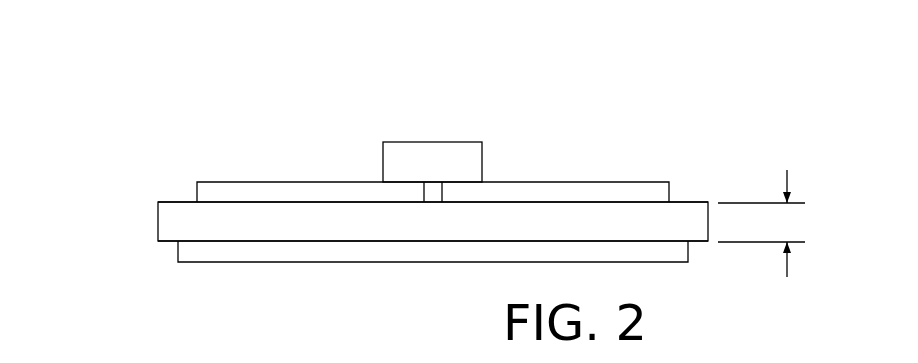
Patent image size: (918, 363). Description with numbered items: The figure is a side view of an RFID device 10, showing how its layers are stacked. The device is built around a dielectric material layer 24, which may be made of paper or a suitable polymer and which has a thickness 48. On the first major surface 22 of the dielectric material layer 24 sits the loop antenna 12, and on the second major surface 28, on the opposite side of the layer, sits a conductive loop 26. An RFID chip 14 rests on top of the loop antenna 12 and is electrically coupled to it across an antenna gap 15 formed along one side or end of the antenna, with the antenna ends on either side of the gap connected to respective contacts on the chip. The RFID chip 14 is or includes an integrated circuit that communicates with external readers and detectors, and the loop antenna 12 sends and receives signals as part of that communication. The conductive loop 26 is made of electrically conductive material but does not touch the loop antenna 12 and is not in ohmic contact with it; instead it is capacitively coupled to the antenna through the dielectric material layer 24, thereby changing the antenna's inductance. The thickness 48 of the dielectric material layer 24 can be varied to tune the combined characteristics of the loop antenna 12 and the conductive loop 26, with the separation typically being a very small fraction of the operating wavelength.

The RFID device 10 is at (610, 105).
The loop antenna 12 is at (593, 188).
The RFID chip 14 is at (430, 142).
The antenna gap 15 is at (433, 192).
The first major surface 22 is at (178, 202).
The dielectric material layer 24 is at (147, 227).
The conductive loop 26 is at (673, 253).
The second major surface 28 is at (170, 243).
The thickness 48 is at (761, 223).